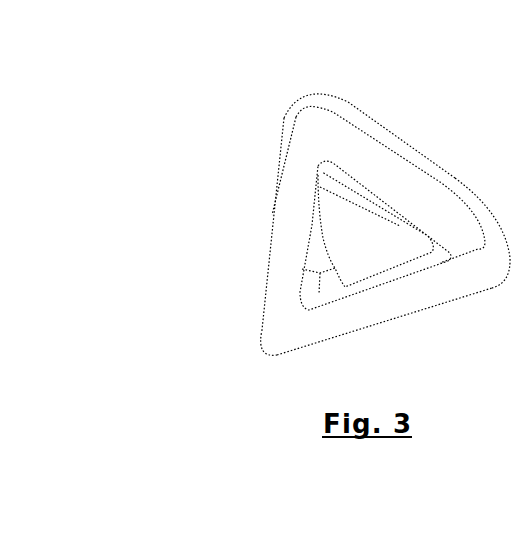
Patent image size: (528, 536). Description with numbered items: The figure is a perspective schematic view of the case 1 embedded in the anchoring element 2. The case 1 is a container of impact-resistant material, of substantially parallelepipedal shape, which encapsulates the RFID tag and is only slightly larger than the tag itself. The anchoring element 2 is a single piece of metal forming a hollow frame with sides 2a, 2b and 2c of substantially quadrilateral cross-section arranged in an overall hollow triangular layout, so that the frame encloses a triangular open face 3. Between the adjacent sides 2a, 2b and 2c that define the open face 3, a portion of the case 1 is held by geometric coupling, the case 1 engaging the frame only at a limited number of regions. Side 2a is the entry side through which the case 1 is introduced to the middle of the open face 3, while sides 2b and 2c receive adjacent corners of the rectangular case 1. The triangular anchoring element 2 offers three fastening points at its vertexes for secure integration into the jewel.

The case 1 is at (353, 222).
The anchoring element 2 is at (298, 195).
The frame side 2a is at (367, 305).
The frame side 2b is at (283, 257).
The frame side 2c is at (410, 188).
The open face 3 is at (429, 254).